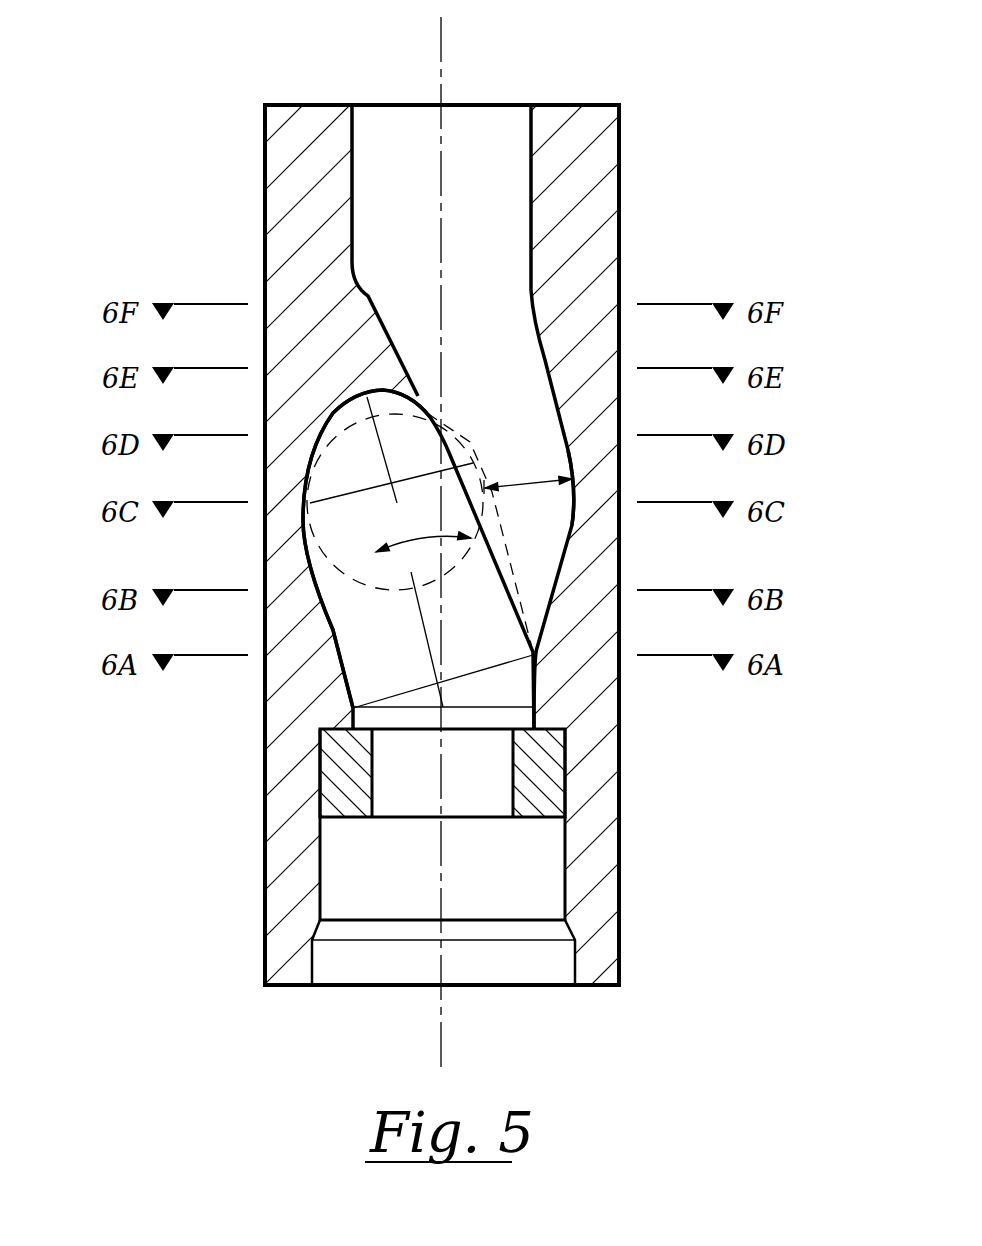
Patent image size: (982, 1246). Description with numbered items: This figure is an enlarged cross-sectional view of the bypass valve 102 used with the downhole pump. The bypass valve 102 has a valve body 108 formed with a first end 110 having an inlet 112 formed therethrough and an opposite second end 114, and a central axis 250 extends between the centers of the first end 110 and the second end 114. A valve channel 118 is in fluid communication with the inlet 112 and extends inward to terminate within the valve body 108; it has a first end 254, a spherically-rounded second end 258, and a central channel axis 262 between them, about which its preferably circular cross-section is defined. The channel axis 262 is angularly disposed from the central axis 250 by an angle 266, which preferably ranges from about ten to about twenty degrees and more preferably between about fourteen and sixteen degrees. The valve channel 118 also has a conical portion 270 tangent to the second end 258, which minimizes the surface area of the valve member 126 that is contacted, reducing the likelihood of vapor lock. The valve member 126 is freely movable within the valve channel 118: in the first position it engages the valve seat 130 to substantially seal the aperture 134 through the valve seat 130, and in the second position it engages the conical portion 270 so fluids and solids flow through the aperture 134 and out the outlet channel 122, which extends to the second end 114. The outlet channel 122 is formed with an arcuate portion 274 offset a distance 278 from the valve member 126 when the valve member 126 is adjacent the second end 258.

The bypass valve 102 is at (258, 160).
The second end 114 is at (580, 135).
The central axis 250 is at (438, 36).
The second end 258 is at (403, 380).
The outlet channel 122 is at (545, 345).
The arcuate portion 274 is at (568, 512).
The first end 254 is at (345, 678).
The valve channel 118 is at (325, 600).
The conical portion 270 is at (310, 470).
The valve member 126 is at (320, 553).
The channel axis 262 is at (425, 615).
The angle 266 is at (420, 538).
The distance 278 is at (527, 482).
The valve body 108 is at (587, 693).
The first end 110 is at (600, 947).
The inlet 112 is at (366, 958).
The valve seat 130 is at (535, 797).
The aperture 134 is at (372, 800).